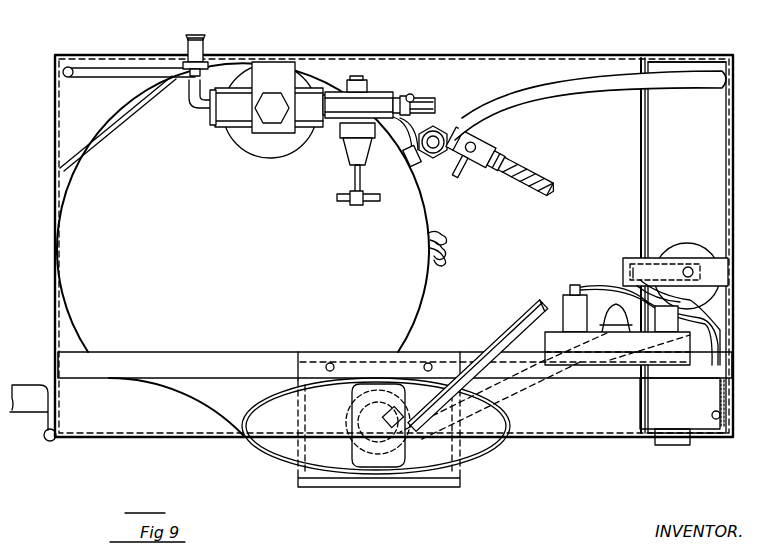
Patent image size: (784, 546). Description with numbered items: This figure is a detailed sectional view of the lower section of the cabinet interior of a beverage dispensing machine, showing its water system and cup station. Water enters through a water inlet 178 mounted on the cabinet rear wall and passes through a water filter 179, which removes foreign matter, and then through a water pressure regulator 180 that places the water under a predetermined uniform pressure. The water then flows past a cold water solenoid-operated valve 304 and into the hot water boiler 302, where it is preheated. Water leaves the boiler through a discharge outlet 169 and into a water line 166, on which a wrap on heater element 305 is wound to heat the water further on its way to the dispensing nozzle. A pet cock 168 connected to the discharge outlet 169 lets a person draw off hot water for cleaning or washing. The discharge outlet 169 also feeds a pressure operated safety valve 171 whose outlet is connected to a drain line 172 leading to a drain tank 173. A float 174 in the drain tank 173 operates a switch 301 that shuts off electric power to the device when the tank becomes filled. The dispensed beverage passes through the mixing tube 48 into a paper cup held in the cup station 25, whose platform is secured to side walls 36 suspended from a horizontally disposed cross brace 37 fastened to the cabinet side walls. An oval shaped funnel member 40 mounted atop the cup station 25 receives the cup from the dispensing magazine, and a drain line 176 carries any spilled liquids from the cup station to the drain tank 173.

The cup station 25 is at (442, 462).
The side walls 36 is at (456, 430).
The cross brace 37 is at (210, 372).
The funnel member 40 is at (253, 446).
The mixing tube 48 is at (498, 322).
The water line 166 is at (482, 168).
The pet cock 168 is at (472, 150).
The discharge outlet 169 is at (420, 160).
The pressure operated safety valve 171 is at (440, 128).
The drain line 172 is at (578, 84).
The drain tank 173 is at (687, 121).
The float 174 is at (672, 246).
The drain line 176 is at (522, 380).
The water inlet 178 is at (203, 52).
The water filter 179 is at (306, 70).
The water pressure regulator 180 is at (367, 96).
The switch 301 is at (700, 274).
The hot water boiler 302 is at (340, 307).
The cold water solenoid-operated valve 304 is at (420, 100).
The wrap on heater element 305 is at (537, 182).